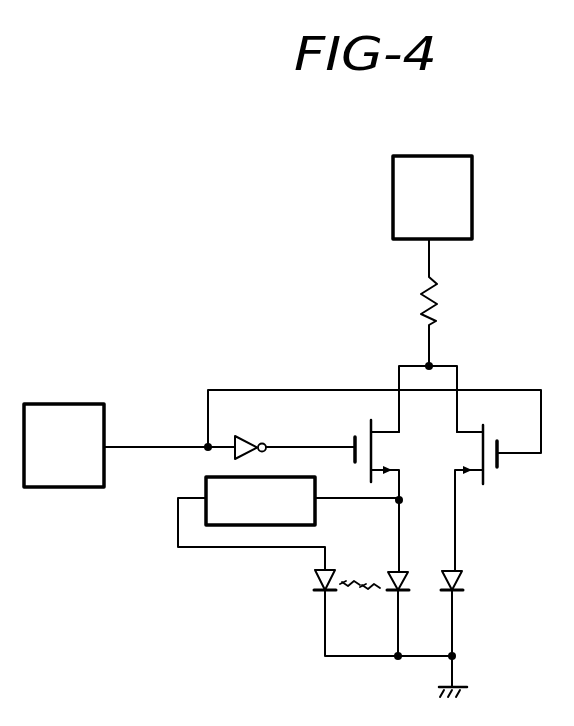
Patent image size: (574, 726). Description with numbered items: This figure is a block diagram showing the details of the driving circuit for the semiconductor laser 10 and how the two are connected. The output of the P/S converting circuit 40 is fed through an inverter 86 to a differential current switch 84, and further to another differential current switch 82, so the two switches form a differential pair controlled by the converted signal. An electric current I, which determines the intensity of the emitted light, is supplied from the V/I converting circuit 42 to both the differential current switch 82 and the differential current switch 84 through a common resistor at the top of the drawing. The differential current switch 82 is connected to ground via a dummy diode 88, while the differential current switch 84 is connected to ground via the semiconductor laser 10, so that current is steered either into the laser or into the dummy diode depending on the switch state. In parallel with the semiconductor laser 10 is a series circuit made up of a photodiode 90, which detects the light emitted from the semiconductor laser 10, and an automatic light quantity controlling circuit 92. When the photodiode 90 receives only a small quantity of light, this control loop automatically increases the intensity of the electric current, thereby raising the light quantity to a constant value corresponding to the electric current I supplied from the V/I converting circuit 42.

The V/I converting circuit 42 is at (472, 210).
The differential current switch 84 is at (362, 433).
The differential current switch 82 is at (490, 476).
The inverter 86 is at (249, 437).
The P/S converting circuit 40 is at (60, 488).
The automatic light quantity controlling circuit 92 is at (233, 526).
The photodiode 90 is at (313, 585).
The semiconductor laser 10 is at (408, 585).
The dummy diode 88 is at (465, 580).